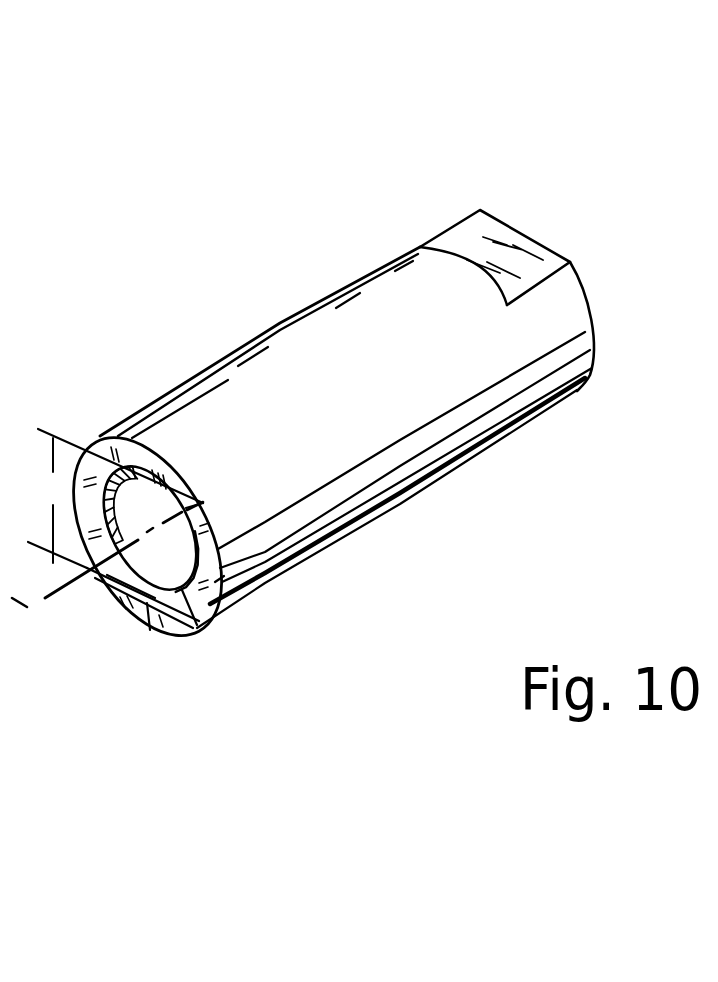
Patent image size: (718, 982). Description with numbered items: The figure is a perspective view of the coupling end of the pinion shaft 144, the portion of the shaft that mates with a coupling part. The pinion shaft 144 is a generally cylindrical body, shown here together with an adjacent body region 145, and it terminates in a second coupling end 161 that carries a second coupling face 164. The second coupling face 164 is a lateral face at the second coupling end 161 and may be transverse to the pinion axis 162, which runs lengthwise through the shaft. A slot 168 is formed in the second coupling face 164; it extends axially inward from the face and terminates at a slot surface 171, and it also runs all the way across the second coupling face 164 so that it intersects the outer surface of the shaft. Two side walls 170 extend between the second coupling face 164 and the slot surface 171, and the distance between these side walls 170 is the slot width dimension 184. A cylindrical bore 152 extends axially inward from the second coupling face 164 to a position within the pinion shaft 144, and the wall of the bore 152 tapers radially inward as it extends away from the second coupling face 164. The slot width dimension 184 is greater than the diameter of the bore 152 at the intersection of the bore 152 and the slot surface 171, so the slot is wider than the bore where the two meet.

The pinion shaft 144 is at (323, 298).
The sleeve body 145 is at (465, 462).
The cylindrical bore 152 is at (122, 482).
The second coupling end 161 is at (160, 434).
The second coupling face 164 is at (131, 450).
The slot width dimension 184 is at (115, 498).
The pinion axis 162 is at (70, 580).
The slot 168 is at (140, 604).
The side walls 170 is at (198, 625).
The slot surface 171 is at (230, 600).